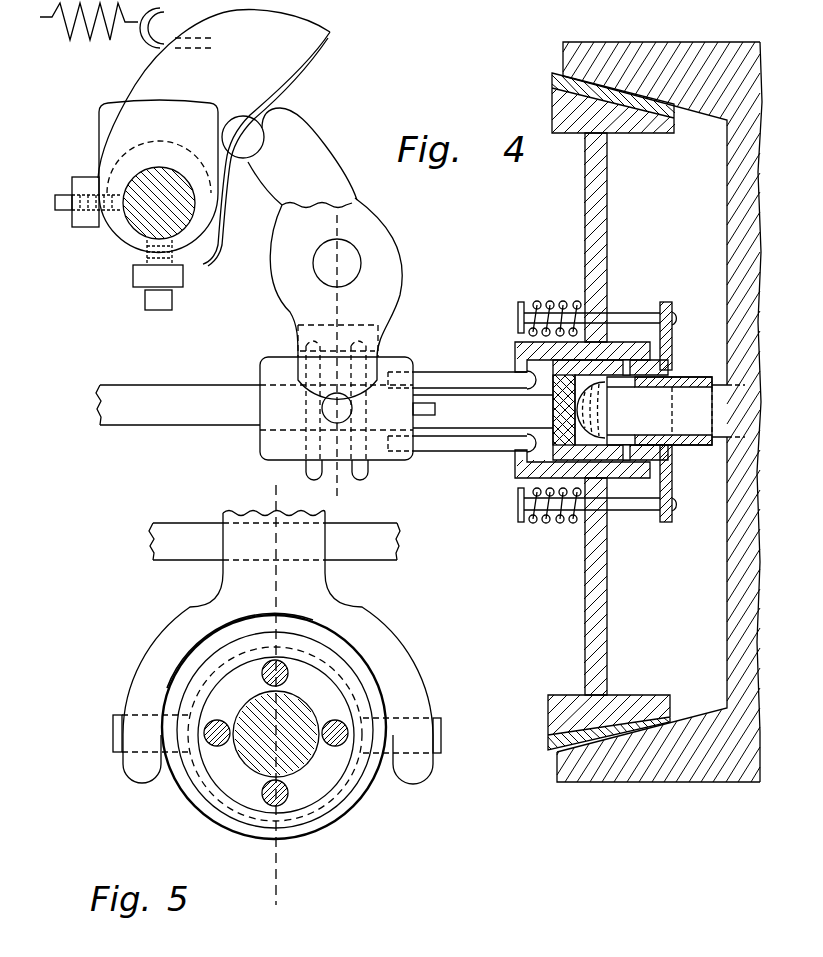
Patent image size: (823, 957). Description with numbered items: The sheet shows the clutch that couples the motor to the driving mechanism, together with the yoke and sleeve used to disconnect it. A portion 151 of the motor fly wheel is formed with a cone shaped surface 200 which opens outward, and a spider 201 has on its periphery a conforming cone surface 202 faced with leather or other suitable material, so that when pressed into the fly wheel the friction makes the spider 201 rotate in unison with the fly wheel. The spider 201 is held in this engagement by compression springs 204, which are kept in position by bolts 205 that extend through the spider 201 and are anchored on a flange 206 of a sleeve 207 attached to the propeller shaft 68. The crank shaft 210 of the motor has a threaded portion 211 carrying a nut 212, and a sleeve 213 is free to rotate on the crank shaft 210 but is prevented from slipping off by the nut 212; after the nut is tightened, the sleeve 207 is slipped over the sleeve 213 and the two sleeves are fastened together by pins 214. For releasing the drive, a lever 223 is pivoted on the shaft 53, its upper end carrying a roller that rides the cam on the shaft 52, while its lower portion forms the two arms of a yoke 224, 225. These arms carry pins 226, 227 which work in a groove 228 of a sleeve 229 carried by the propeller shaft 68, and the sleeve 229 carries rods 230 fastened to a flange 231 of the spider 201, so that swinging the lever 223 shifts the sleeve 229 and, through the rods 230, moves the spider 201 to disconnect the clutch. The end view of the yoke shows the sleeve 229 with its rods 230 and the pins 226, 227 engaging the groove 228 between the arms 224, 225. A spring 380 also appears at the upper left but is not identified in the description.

In FIG. 4, the spring 380 is at (83, 36).
In FIG. 4, the shaft 52 is at (135, 228).
In FIG. 4, the shaft 53 is at (358, 250).
In FIG. 4, the lever 223 is at (405, 292).
In FIG. 4, the sleeve 229 is at (258, 449).
In FIG. 5, the sleeve 229 is at (322, 831).
In FIG. 4, the groove 228 is at (337, 466).
In FIG. 5, the groove 228 is at (215, 797).
In FIG. 4, the pin 226 is at (352, 426).
In FIG. 5, the pin 226 is at (441, 746).
In FIG. 5, the pin 227 is at (112, 726).
In FIG. 4, the propeller shaft 68 is at (138, 428).
In FIG. 5, the propeller shaft 68 is at (312, 712).
In FIG. 4, the rods 230 is at (436, 372).
In FIG. 5, the rods 230 is at (289, 677).
In FIG. 4, the flange 231 is at (520, 376).
In FIG. 4, the sleeve 207 is at (516, 360).
In FIG. 4, the threaded portion 211 is at (556, 410).
In FIG. 4, the nut 212 is at (600, 391).
In FIG. 4, the sleeve 213 is at (690, 378).
In FIG. 4, the crank shaft 210 is at (720, 447).
In FIG. 4, the pins 214 is at (630, 361).
In FIG. 4, the flange 206 is at (673, 348).
In FIG. 4, the bolts 205 is at (616, 316).
In FIG. 4, the compression springs 204 is at (540, 302).
In FIG. 4, the spider 201 is at (608, 219).
In FIG. 4, the cone surface 202 is at (552, 89).
In FIG. 4, the cone shaped surface 200 is at (707, 115).
In FIG. 4, the portion of fly wheel 151 is at (668, 42).
In FIG. 5, the yoke arm 224 is at (388, 643).
In FIG. 5, the yoke arm 225 is at (155, 650).